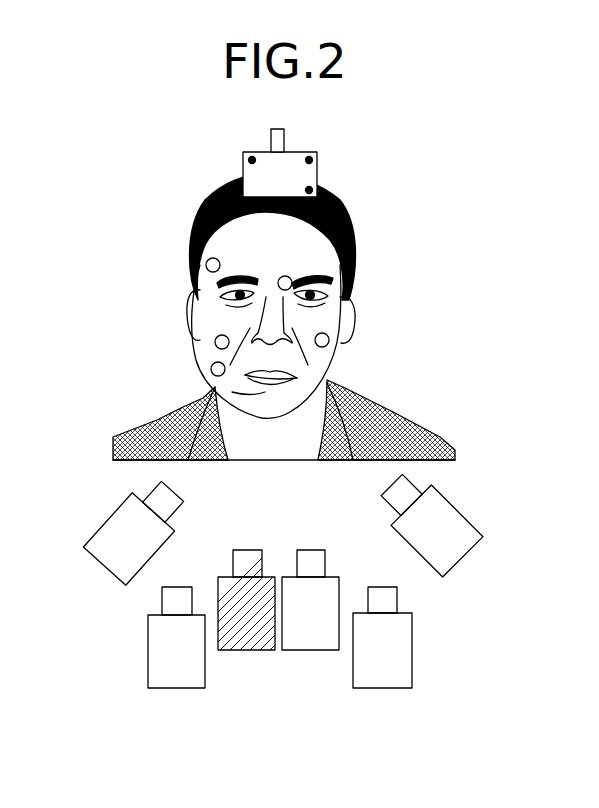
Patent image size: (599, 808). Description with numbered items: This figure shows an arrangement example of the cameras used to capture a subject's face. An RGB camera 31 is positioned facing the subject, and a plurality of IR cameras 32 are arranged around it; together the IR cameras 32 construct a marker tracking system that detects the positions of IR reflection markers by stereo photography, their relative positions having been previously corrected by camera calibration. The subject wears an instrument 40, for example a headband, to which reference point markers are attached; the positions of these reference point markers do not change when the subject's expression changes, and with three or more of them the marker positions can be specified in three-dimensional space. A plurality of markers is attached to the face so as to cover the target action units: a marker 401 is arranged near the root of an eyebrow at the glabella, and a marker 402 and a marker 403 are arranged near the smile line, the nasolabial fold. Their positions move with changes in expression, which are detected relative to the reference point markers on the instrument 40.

The instrument 40 is at (300, 150).
The marker 401 is at (290, 277).
The marker 402 is at (219, 335).
The marker 403 is at (214, 364).
The RGB camera 31 is at (247, 651).
The IR camera 32 is at (313, 651).